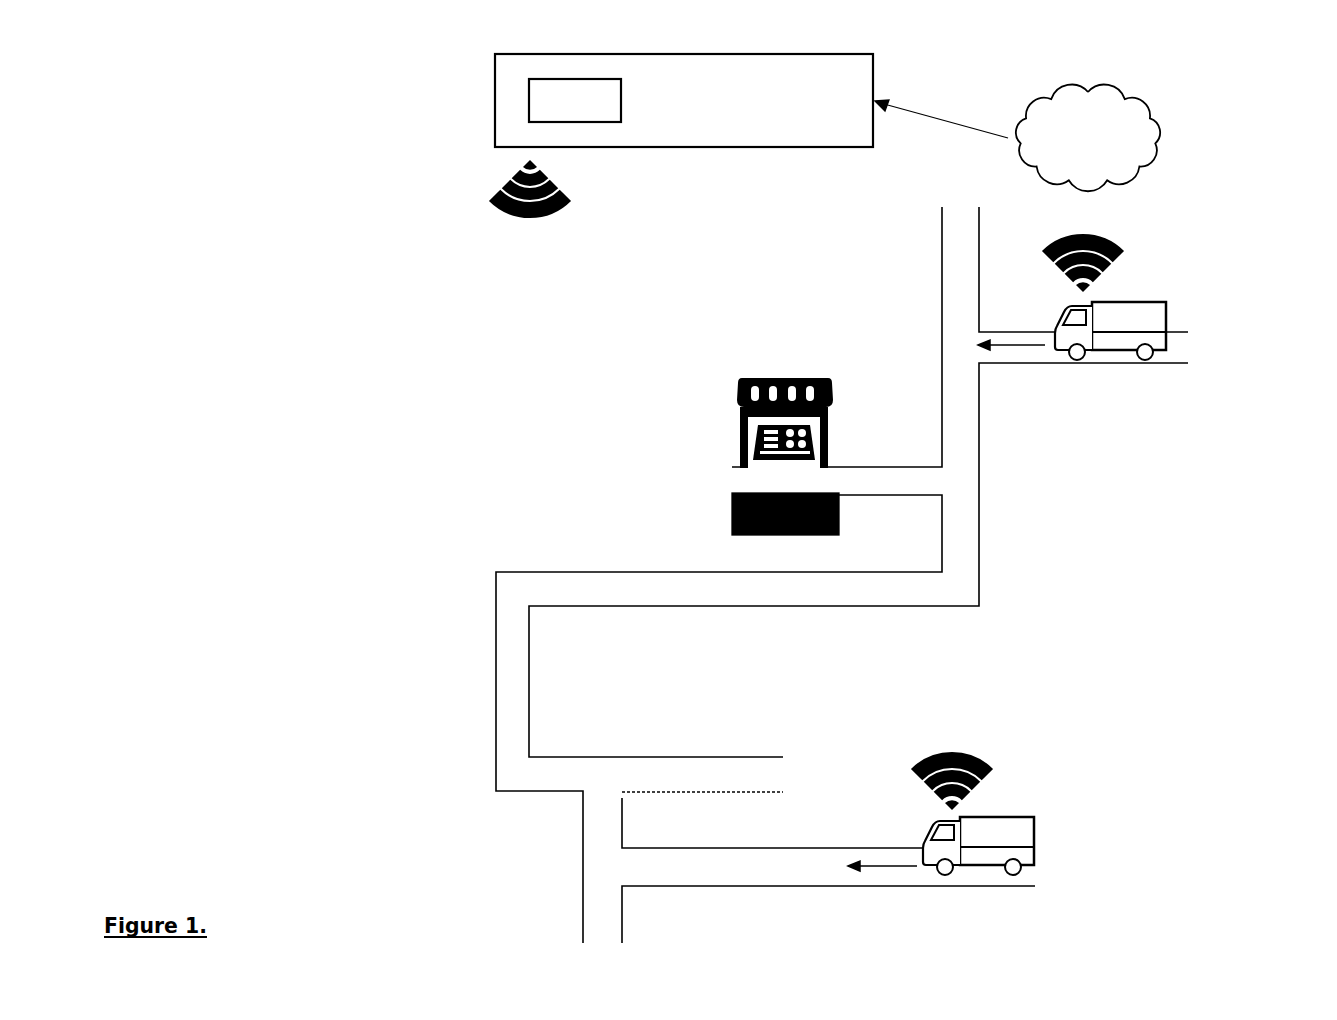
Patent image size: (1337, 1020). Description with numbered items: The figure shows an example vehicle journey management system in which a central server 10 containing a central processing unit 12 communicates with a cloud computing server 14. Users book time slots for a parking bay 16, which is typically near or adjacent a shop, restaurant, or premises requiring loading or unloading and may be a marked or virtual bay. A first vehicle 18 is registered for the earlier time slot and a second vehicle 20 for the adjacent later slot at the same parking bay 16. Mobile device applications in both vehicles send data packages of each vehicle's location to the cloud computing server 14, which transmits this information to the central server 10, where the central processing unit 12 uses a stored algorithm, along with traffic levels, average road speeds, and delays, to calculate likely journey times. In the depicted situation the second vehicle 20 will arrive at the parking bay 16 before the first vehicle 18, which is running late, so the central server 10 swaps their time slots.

The central server 10 is at (495, 68).
The central processing unit 12 is at (529, 105).
The cloud computing server 14 is at (1167, 125).
The parking bay 16 is at (732, 510).
The first vehicle 18 is at (1038, 825).
The second vehicle 20 is at (1167, 308).